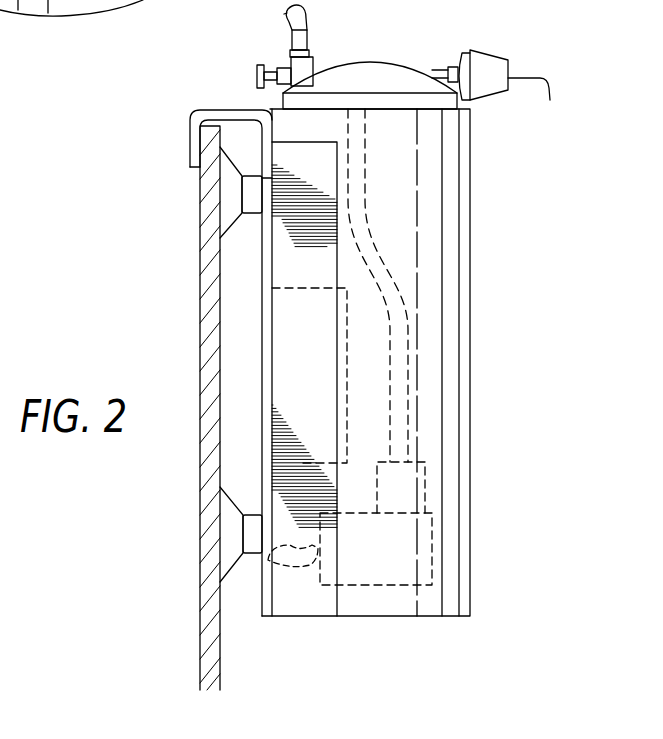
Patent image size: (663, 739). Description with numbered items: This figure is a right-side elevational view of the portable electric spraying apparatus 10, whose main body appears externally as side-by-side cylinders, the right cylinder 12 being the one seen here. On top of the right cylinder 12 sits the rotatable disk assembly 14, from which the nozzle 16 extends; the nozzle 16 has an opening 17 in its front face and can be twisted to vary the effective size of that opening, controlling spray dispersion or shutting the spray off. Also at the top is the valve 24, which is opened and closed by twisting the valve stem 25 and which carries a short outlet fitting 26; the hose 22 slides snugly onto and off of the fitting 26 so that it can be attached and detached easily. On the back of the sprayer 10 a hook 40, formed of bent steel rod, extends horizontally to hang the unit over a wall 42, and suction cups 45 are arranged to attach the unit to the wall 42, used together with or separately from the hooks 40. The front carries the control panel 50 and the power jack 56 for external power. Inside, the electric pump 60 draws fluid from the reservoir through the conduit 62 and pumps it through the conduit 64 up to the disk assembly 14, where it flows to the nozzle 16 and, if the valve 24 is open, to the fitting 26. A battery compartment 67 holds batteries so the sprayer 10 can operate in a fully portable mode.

The portable electric spraying apparatus 10 is at (448, 274).
The right cylinder 12 is at (57, 0).
The rotatable disk assembly 14 is at (283, 99).
The nozzle 16 is at (483, 65).
The opening 17 is at (534, 102).
The hose 22 is at (300, 25).
The valve 24 is at (302, 72).
The valve stem 25 is at (277, 83).
The outlet fitting 26 is at (308, 53).
The hooks 40 is at (190, 148).
The wall 42 is at (210, 617).
The suction cups 45 is at (227, 197).
The control panel 50 is at (105, 0).
The power jack 56 is at (180, 0).
The electric pump 60 is at (395, 573).
The conduit 62 is at (293, 560).
The conduit 64 is at (397, 400).
The battery compartment 67 is at (300, 380).